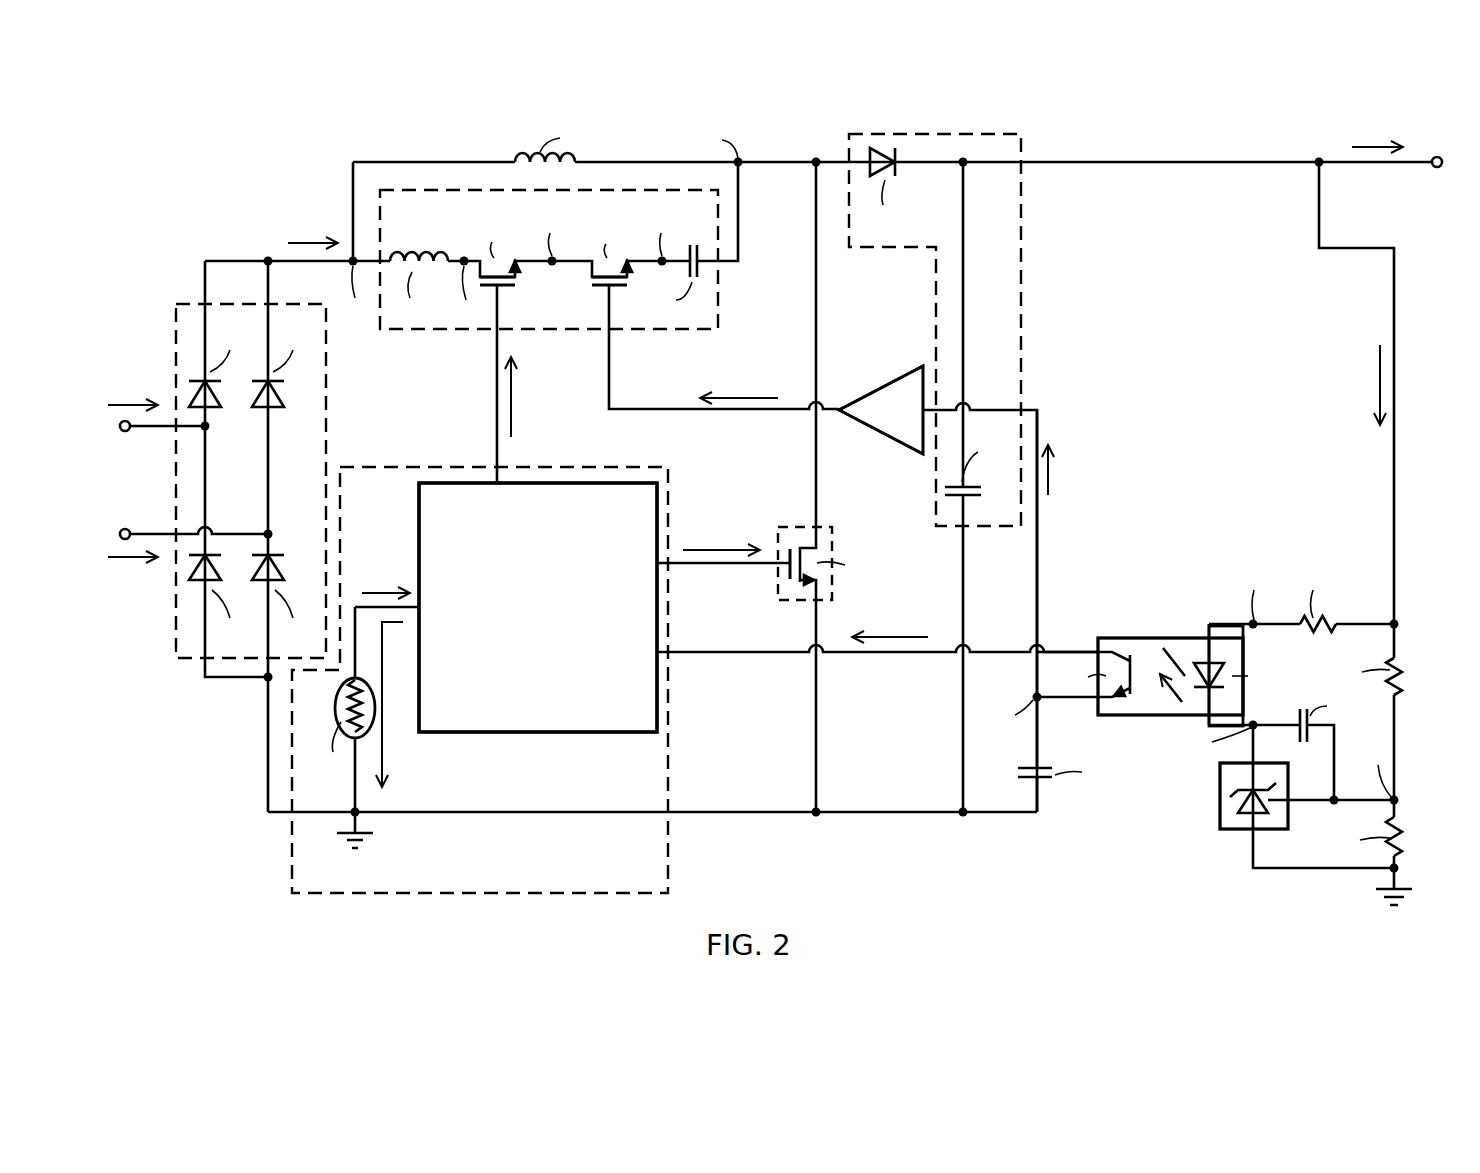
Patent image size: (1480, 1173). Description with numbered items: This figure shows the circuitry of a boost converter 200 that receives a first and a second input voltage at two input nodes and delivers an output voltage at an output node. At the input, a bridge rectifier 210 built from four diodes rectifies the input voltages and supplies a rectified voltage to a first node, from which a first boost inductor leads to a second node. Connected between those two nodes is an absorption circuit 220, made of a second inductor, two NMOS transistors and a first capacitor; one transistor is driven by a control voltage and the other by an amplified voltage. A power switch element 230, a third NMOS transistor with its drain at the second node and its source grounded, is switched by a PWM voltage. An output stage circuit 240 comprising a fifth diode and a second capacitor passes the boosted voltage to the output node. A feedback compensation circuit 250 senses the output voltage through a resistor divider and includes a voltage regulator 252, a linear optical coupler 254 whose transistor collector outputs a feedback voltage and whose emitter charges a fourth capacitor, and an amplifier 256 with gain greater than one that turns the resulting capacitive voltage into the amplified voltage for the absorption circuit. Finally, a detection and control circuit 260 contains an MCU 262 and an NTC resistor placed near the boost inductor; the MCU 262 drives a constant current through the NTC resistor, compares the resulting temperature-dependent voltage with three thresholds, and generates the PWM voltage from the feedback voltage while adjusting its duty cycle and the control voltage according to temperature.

The boost converter 200 is at (152, 137).
The bridge rectifier 210 is at (176, 304).
The absorption circuit 220 is at (382, 330).
The power switch element 230 is at (826, 527).
The output stage circuit 240 is at (851, 134).
The feedback compensation circuit 250 is at (945, 835).
The voltage regulator 252 is at (1220, 818).
The linear optical coupler 254 is at (1148, 636).
The amplifier 256 is at (882, 368).
The detection and control circuit 260 is at (341, 467).
The MCU 262 is at (515, 733).